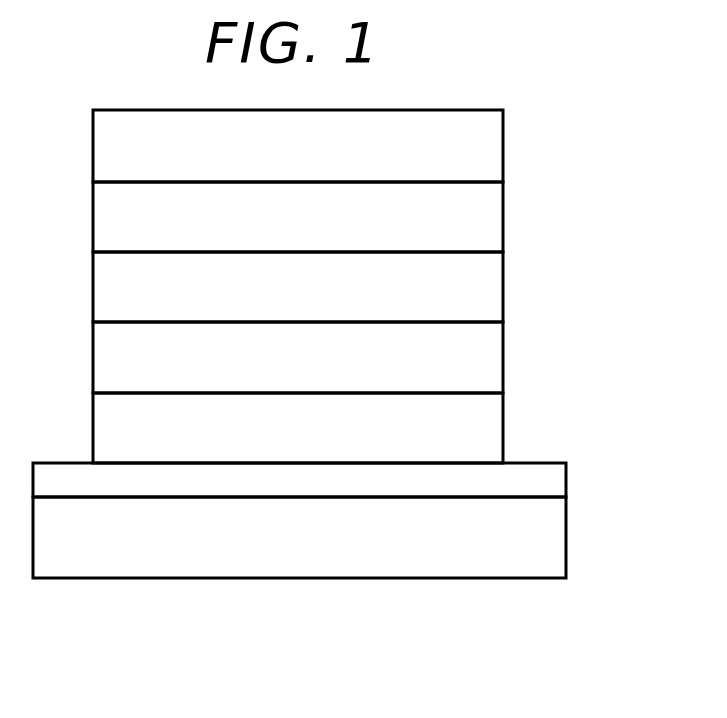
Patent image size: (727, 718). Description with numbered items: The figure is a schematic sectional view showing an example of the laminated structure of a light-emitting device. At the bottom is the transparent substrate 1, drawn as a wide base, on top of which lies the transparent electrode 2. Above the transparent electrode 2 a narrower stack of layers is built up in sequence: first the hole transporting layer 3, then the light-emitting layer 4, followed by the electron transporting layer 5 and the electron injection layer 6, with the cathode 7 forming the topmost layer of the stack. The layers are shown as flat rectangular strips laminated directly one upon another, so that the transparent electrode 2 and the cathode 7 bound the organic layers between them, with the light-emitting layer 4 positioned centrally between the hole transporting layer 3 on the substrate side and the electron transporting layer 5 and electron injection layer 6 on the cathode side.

The transparent substrate 1 is at (555, 542).
The transparent electrode 2 is at (555, 478).
The hole transporting layer 3 is at (493, 422).
The light-emitting layer 4 is at (493, 353).
The electron transporting layer 5 is at (493, 283).
The electron injection layer 6 is at (493, 213).
The cathode 7 is at (493, 145).